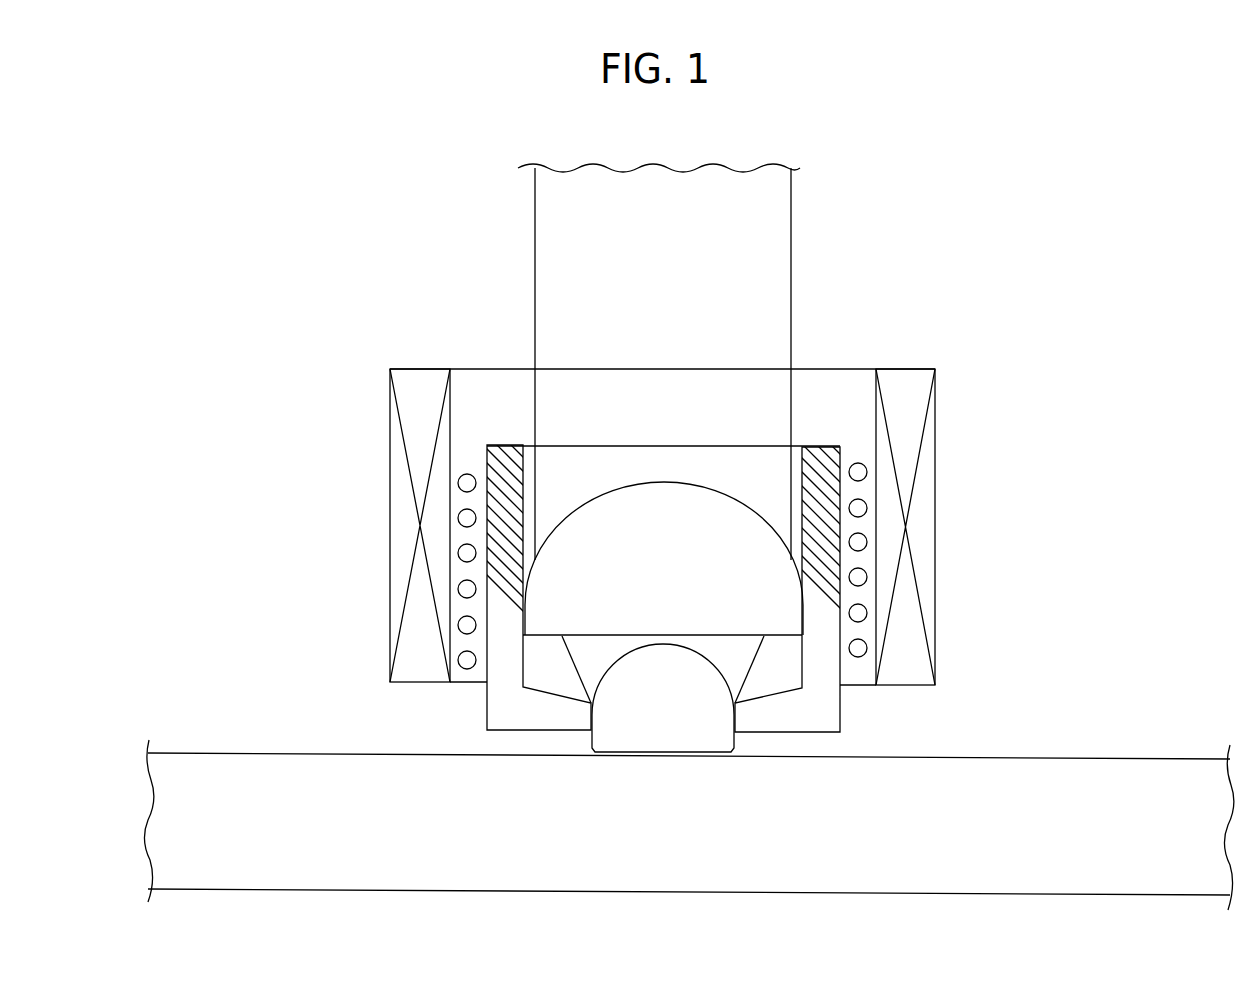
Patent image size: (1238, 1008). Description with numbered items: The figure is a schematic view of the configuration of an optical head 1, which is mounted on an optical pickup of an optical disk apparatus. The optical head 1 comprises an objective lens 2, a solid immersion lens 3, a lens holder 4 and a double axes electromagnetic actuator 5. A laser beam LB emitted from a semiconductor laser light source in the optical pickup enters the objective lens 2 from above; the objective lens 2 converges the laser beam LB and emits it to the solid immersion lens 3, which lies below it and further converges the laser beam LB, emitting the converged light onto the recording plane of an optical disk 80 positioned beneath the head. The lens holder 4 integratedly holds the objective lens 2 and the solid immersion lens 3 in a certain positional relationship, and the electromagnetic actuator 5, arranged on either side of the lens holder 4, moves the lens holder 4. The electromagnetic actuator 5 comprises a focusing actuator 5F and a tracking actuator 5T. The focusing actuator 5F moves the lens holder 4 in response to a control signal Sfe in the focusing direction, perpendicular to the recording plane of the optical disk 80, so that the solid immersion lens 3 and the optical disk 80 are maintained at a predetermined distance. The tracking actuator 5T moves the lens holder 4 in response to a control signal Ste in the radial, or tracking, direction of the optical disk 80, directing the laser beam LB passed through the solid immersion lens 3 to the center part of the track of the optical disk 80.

The optical head 1 is at (1003, 265).
The objective lens 2 is at (726, 506).
The solid immersion lens 3 is at (706, 668).
The lens holder 4 is at (832, 713).
The double axes electromagnetic actuator 5 is at (935, 295).
The focusing actuator 5F is at (858, 462).
The tracking actuator 5T is at (913, 385).
The optical disk 80 is at (1081, 763).
The laser beam LB is at (542, 209).
The control signal Sfe is at (467, 470).
The control signal Ste is at (421, 367).